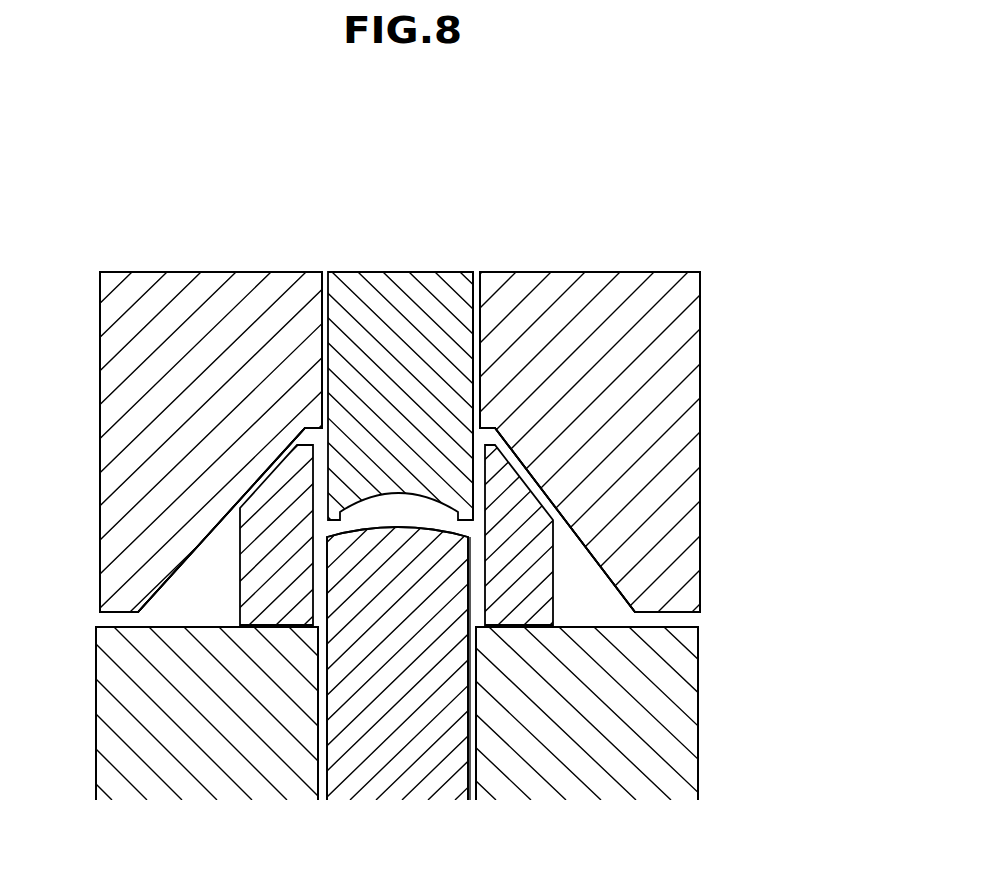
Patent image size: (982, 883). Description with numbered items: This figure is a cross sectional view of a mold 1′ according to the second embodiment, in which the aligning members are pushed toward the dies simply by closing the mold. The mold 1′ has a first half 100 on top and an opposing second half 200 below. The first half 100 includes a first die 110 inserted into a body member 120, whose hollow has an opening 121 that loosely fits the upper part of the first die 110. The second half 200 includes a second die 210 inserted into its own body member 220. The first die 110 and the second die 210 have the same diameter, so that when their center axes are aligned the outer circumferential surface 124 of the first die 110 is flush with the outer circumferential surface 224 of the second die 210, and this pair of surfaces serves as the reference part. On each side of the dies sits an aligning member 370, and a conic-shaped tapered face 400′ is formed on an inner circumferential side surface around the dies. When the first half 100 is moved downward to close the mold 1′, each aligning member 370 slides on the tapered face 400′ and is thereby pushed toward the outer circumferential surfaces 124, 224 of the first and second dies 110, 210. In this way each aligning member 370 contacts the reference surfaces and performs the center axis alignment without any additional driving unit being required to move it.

The mold 1′ is at (854, 281).
The first half 100 is at (723, 493).
The first die 110 is at (408, 297).
The body member 120 is at (200, 297).
The opening 121 is at (208, 566).
The outer circumferential surface 124 is at (473, 390).
The second half 200 is at (721, 771).
The second die 210 is at (388, 775).
The body member 220 is at (202, 775).
The outer circumferential surface 224 is at (470, 718).
The aligning member 370 is at (278, 598).
The tapered face 400′ is at (530, 463).